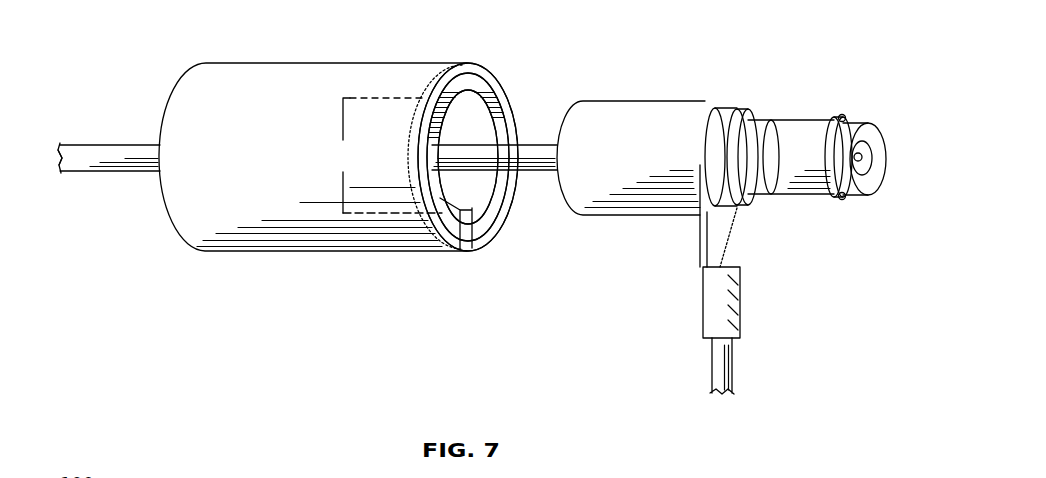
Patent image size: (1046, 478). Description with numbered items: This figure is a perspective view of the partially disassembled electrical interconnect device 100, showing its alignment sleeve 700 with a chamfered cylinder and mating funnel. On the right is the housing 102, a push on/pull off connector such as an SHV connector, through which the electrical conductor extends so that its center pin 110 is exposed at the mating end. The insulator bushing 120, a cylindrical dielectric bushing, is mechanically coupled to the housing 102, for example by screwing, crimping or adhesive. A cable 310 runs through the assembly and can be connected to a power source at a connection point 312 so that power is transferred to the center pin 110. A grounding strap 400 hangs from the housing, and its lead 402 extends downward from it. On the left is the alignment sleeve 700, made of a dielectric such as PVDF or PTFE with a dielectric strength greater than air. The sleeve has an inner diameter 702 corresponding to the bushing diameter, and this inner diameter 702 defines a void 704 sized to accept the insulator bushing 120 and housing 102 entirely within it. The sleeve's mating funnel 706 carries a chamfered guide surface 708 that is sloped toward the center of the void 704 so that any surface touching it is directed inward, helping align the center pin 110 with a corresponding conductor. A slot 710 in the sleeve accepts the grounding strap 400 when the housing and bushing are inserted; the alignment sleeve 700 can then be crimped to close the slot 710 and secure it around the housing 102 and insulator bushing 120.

The electrical interconnect device 100 is at (163, 48).
The housing 102 is at (812, 156).
The center pin 110 is at (859, 161).
The insulator bushing 120 is at (660, 151).
The cable 310 is at (107, 157).
The connection point 312 is at (42, 150).
The grounding strap 400 is at (720, 222).
The cable lead 402 is at (722, 348).
The alignment sleeve 700 is at (253, 170).
The inner diameter 702 is at (383, 155).
The void 704 is at (468, 128).
The mating funnel 706 is at (468, 82).
The chamfered guide surface 708 is at (480, 103).
The slot 710 is at (465, 246).